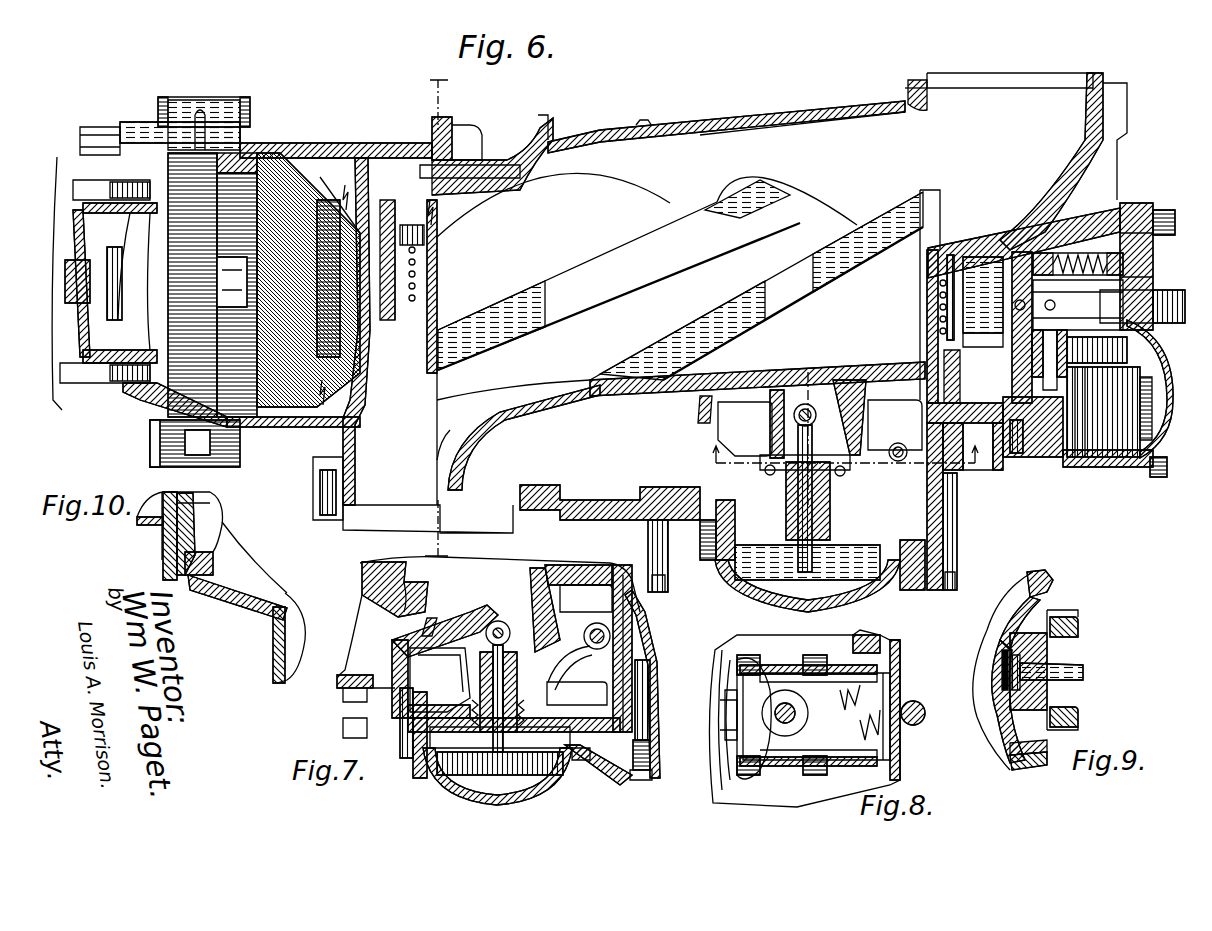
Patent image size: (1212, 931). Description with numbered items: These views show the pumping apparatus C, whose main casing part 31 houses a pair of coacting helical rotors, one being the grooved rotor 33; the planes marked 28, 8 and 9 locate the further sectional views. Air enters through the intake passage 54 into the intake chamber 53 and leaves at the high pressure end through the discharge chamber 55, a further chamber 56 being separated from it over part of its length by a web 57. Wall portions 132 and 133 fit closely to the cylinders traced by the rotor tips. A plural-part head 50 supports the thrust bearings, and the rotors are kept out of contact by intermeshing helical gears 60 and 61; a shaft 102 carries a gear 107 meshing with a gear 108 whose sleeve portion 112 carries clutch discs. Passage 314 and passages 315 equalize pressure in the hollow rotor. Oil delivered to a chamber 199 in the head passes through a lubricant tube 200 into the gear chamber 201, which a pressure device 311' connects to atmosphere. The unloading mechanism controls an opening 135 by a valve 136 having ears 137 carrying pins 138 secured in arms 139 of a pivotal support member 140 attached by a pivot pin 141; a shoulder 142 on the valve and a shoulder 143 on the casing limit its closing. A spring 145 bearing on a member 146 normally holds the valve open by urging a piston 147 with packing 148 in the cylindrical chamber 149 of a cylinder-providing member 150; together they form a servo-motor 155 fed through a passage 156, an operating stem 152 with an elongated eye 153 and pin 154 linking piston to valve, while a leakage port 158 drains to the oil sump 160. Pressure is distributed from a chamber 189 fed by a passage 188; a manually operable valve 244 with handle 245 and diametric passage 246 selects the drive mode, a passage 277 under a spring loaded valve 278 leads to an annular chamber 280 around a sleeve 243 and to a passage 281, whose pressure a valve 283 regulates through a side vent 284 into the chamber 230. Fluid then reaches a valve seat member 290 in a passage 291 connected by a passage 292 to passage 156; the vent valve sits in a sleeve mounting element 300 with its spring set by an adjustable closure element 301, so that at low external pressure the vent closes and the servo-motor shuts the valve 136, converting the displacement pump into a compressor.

In FIG. 6, the section line 28 is at (422, 80).
In FIG. 6, the main casing part 31 is at (798, 115).
In FIG. 8, the main casing part 31 is at (902, 668).
In FIG. 6, the rotor 33 is at (700, 212).
In FIG. 6, the plural-part head 50 is at (318, 144).
In FIG. 6, the intake chamber 53 is at (958, 122).
In FIG. 6, the intake passage 54 is at (1057, 86).
In FIG. 6, the discharge chamber 55 is at (428, 519).
In FIG. 6, the chamber 56 is at (552, 445).
In FIG. 7, the chamber 56 is at (362, 602).
In FIG. 6, the web 57 is at (482, 440).
In FIG. 6, the helical gear 60 is at (366, 331).
In FIG. 6, the helical gear 61 is at (270, 170).
In FIG. 6, the shaft 102 is at (228, 265).
In FIG. 6, the gear 107 is at (185, 302).
In FIG. 6, the gear 108 is at (150, 400).
In FIG. 6, the sleeve portion 112 is at (242, 402).
In FIG. 9, the wall portion 132 is at (1035, 572).
In FIG. 9, the wall portion 133 is at (1012, 765).
In FIG. 6, the opening 135 is at (698, 405).
In FIG. 7, the opening 135 is at (403, 609).
In FIG. 9, the opening 135 is at (1032, 766).
In FIG. 6, the valve 136 is at (735, 392).
In FIG. 7, the valve 136 is at (433, 640).
In FIG. 8, the valve 136 is at (730, 737).
In FIG. 9, the valve 136 is at (1008, 628).
In FIG. 8, the ears 137 is at (740, 662).
In FIG. 8, the pins 138 is at (740, 670).
In FIG. 8, the arms or flanges 139 is at (760, 700).
In FIG. 9, the arms or flanges 139 is at (1072, 612).
In FIG. 8, the pivotal support member 140 is at (900, 702).
In FIG. 8, the pivot pin 141 is at (890, 646).
In FIG. 6, the shoulder 142 is at (888, 448).
In FIG. 7, the shoulder 142 is at (578, 664).
In FIG. 6, the shoulder 143 is at (858, 440).
In FIG. 7, the shoulder 143 is at (558, 640).
In FIG. 6, the spring 145 is at (742, 584).
In FIG. 7, the spring 145 is at (516, 743).
In FIG. 6, the member 146 is at (958, 524).
In FIG. 10, the member 146 is at (176, 562).
In FIG. 7, the member 146 is at (664, 700).
In FIG. 8, the member 146 is at (725, 717).
In FIG. 6, the piston 147 is at (712, 566).
In FIG. 7, the piston 147 is at (606, 770).
In FIG. 6, the packing 148 is at (706, 562).
In FIG. 7, the packing 148 is at (646, 767).
In FIG. 6, the cylindrical chamber 149 is at (748, 602).
In FIG. 10, the cylindrical chamber 149 is at (163, 536).
In FIG. 7, the cylindrical chamber 149 is at (430, 770).
In FIG. 6, the cylinder-providing member 150 is at (958, 556).
In FIG. 10, the cylinder-providing member 150 is at (140, 520).
In FIG. 7, the cylinder-providing member 150 is at (546, 723).
In FIG. 8, the cylinder-providing member 150 is at (722, 737).
In FIG. 6, the piston rod or operating stem 152 is at (774, 440).
In FIG. 7, the piston rod or operating stem 152 is at (480, 680).
In FIG. 8, the piston rod or operating stem 152 is at (804, 720).
In FIG. 9, the piston rod or operating stem 152 is at (1075, 662).
In FIG. 6, the elongated eye 153 is at (792, 410).
In FIG. 7, the elongated eye 153 is at (499, 620).
In FIG. 9, the elongated eye 153 is at (1000, 668).
In FIG. 6, the pin 154 is at (814, 418).
In FIG. 7, the pin 154 is at (488, 630).
In FIG. 9, the pin 154 is at (1045, 690).
In FIG. 6, the servo-motor 155 is at (898, 586).
In FIG. 7, the servo-motor 155 is at (548, 786).
In FIG. 6, the connection or passage 156 is at (985, 496).
In FIG. 7, the connection or passage 156 is at (655, 684).
In FIG. 8, the connection or passage 156 is at (912, 726).
In FIG. 10, the leakage port 158 is at (250, 595).
In FIG. 10, the oil sump 160 is at (292, 645).
In FIG. 6, the passage 188 is at (1012, 312).
In FIG. 6, the chamber 189 is at (970, 278).
In FIG. 6, the chamber 199 is at (141, 266).
In FIG. 6, the lubricant tube 200 is at (248, 180).
In FIG. 6, the chamber 201 is at (235, 168).
In FIG. 6, the chamber 230 is at (1140, 354).
In FIG. 6, the sleeve 243 is at (1135, 218).
In FIG. 6, the manually operable valve 244 is at (1174, 234).
In FIG. 6, the handle 245 is at (1172, 292).
In FIG. 6, the diametric passage 246 is at (1080, 258).
In FIG. 6, the passage 277 is at (1022, 262).
In FIG. 6, the spring loaded valve 278 is at (1040, 256).
In FIG. 6, the annular chamber 280 is at (1112, 250).
In FIG. 6, the passage 281 is at (1048, 360).
In FIG. 6, the valve 283 is at (1130, 366).
In FIG. 6, the side vent 284 is at (1062, 370).
In FIG. 6, the valve seat member 290 is at (1062, 468).
In FIG. 6, the passage 291 is at (1022, 455).
In FIG. 6, the passage 292 is at (955, 410).
In FIG. 7, the passage 292 is at (636, 648).
In FIG. 6, the sleeve mounting element 300 is at (1155, 478).
In FIG. 6, the adjustable closure element and spring tension regulator 301 is at (1148, 425).
In FIG. 6, the pressure device 311' is at (99, 128).
In FIG. 6, the passage 314 is at (414, 232).
In FIG. 6, the passages 315 is at (944, 270).
In FIG. 6, the section line 8 is at (845, 461).
In FIG. 6, the section line 9 is at (800, 370).
In FIG. 6, the pumping apparatus C is at (672, 118).